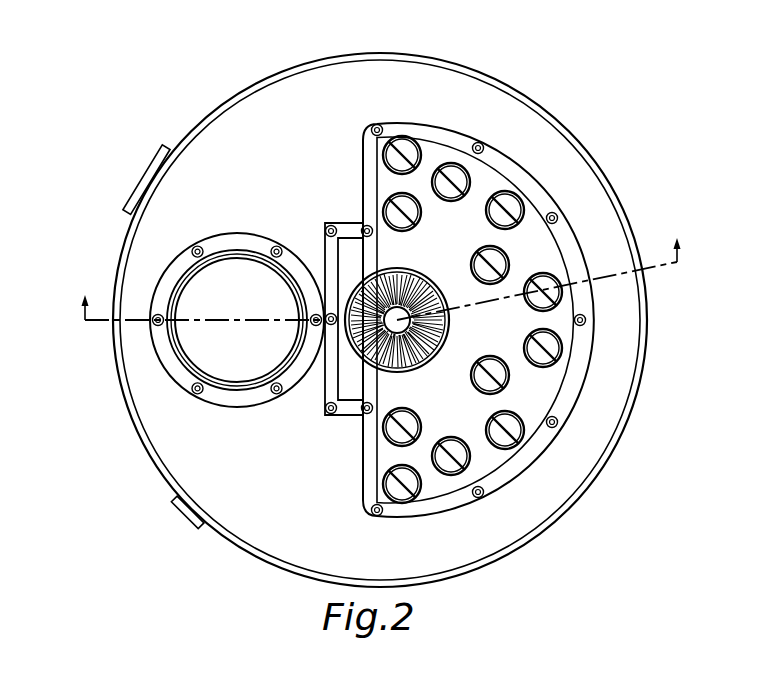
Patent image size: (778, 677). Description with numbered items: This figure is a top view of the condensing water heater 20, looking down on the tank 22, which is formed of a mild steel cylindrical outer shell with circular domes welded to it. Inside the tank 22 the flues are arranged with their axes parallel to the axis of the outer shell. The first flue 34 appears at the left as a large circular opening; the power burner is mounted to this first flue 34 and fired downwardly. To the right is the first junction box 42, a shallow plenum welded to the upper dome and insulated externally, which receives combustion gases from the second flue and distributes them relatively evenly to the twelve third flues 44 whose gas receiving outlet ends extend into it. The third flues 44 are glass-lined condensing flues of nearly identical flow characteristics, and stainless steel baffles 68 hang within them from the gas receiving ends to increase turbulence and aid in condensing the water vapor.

The water heater 20 is at (374, 307).
The tank 22 is at (632, 403).
The first flue 34 is at (243, 372).
The first junction box 42 is at (533, 450).
The third flues 44 is at (470, 180).
The baffles 68 is at (460, 165).